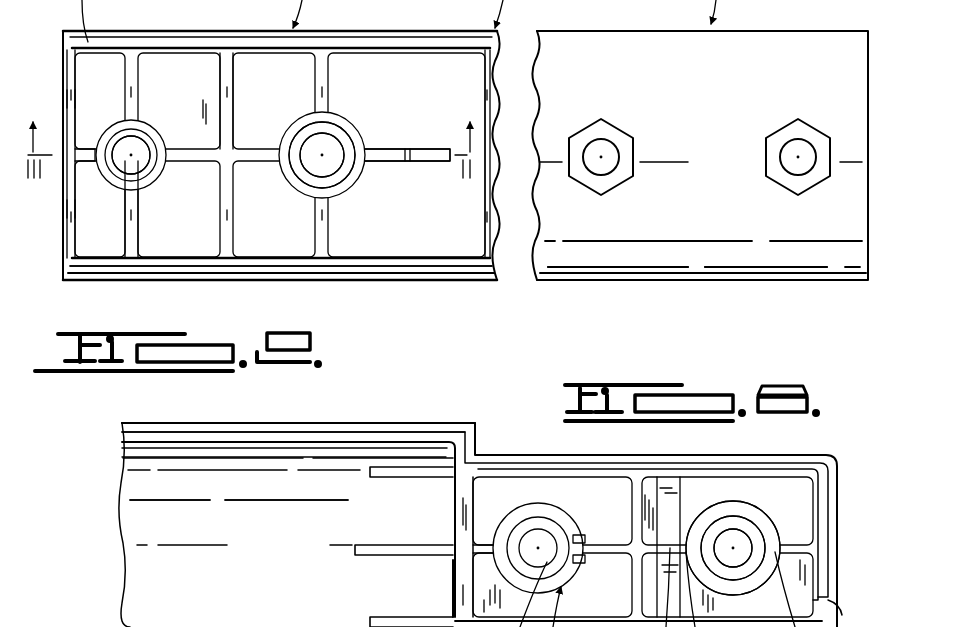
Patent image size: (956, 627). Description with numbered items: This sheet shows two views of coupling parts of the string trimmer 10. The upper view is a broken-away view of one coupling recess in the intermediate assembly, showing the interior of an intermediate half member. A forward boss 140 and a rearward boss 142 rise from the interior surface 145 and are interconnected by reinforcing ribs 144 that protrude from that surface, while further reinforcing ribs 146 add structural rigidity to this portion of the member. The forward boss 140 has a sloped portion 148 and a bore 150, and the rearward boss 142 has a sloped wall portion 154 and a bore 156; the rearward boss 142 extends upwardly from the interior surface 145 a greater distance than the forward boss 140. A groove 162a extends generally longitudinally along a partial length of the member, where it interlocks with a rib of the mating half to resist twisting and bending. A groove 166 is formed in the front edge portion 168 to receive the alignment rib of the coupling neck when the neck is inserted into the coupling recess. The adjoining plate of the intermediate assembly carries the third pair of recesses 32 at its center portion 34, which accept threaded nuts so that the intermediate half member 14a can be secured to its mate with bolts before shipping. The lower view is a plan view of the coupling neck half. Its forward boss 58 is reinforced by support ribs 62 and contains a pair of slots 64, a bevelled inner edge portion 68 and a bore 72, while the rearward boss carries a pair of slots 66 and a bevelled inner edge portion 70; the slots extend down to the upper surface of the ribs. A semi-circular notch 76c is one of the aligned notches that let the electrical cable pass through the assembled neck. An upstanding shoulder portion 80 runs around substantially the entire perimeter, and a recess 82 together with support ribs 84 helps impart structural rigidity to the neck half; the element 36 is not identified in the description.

In FIG. 9, the string trimmer 10 is at (246, 134).
In FIG. 9, the forward boss 140 is at (158, 117).
In FIG. 9, the rearward boss 142 is at (368, 179).
In FIG. 9, the reinforcing ribs 144 is at (390, 150).
In FIG. 9, the interior surface 145 is at (290, 245).
In FIG. 9, the reinforcing ribs 146 is at (228, 122).
In FIG. 9, the sloped portion 148 is at (143, 180).
In FIG. 9, the bore 150 is at (124, 142).
In FIG. 9, the sloped wall portion 154 is at (340, 180).
In FIG. 9, the bore 156 is at (325, 138).
In FIG. 9, the groove 162a is at (95, 263).
In FIG. 9, the groove 166 is at (65, 100).
In FIG. 9, the front edge portion 168 is at (66, 210).
In FIG. 9, the recesses 32 is at (615, 138).
In FIG. 9, the intermediate half member 14a is at (578, 266).
In FIG. 9, the center portion 34 is at (792, 256).
In FIG. 8, the top wall 36 is at (182, 440).
In FIG. 8, the upstanding shoulder portion 80 is at (321, 434).
In FIG. 8, the recess 82 is at (327, 546).
In FIG. 8, the support ribs 84 is at (386, 471).
In FIG. 8, the semi-circular notch 76c is at (458, 604).
In FIG. 8, the bevelled inner edge portion 70 is at (531, 512).
In FIG. 8, the bore 72 is at (733, 540).
In FIG. 8, the forward boss 58 is at (762, 505).
In FIG. 8, the support ribs 62 is at (622, 568).
In FIG. 8, the slots 64 is at (767, 545).
In FIG. 8, the slots 66 is at (505, 540).
In FIG. 8, the bevelled inner edge portion 68 is at (757, 573).